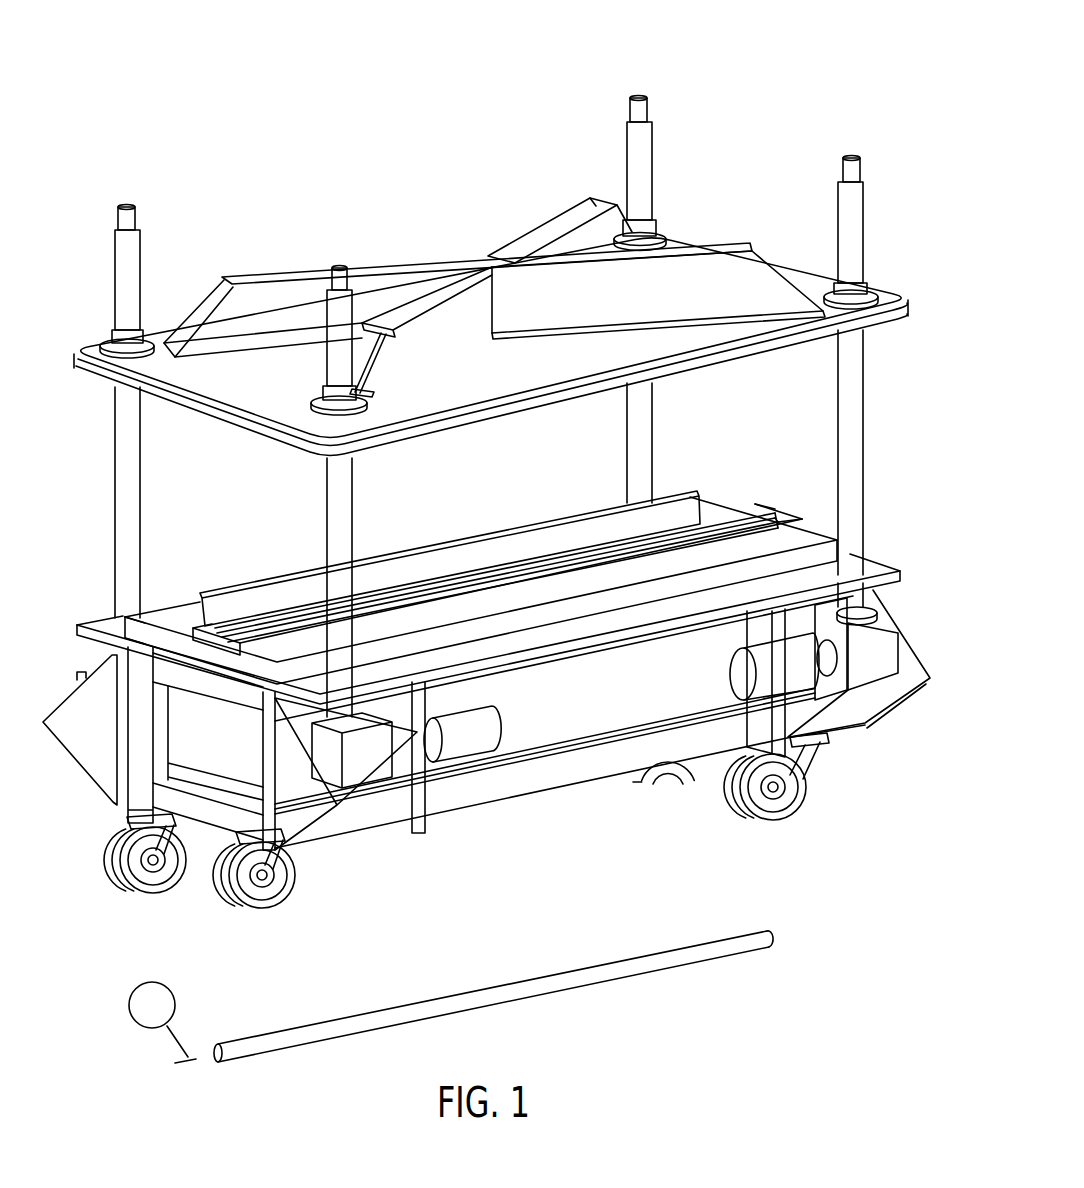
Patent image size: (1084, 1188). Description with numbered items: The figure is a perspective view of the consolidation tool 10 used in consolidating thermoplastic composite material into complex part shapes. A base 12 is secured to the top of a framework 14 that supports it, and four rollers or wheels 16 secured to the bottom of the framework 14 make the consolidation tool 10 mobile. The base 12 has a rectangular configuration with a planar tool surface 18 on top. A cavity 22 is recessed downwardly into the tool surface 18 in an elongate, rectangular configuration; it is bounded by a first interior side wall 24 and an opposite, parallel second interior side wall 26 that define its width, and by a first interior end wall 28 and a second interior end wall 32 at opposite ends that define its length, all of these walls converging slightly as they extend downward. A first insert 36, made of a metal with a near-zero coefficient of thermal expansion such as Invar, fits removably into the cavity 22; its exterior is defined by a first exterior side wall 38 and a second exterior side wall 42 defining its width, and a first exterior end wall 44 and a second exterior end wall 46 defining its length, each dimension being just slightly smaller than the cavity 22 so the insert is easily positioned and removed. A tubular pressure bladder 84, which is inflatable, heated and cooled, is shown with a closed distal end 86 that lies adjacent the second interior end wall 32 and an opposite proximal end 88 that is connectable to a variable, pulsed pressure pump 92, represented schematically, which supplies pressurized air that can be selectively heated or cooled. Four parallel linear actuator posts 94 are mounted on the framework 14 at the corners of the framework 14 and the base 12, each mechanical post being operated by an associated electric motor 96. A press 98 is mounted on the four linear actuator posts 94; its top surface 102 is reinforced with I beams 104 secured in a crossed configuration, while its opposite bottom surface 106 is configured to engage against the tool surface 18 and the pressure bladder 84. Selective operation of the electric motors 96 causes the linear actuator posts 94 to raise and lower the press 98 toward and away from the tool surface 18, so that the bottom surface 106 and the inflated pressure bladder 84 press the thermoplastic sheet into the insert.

The consolidation tool 10 is at (801, 56).
The base 12 is at (230, 635).
The framework 14 is at (506, 808).
The rollers or wheels 16 is at (125, 880).
The tool surface 18 is at (312, 590).
The cavity 22 is at (515, 550).
The first interior side wall 24 is at (425, 600).
The second interior side wall 26 is at (430, 583).
The first interior end wall 28 is at (205, 624).
The second interior end wall 32 is at (763, 520).
The first insert 36 is at (462, 590).
The first exterior side wall 38 is at (627, 533).
The second exterior side wall 42 is at (700, 543).
The first exterior end wall 44 is at (210, 633).
The second exterior end wall 46 is at (777, 522).
The pressure bladder 84 is at (443, 1003).
The distal end 86 is at (772, 937).
The proximal end 88 is at (207, 1047).
The variable pulsed pressure pump 92 is at (160, 980).
The linear actuator posts 94 is at (130, 262).
The electric motor 96 is at (460, 745).
The press 98 is at (298, 370).
The top surface 102 is at (817, 282).
The I beams 104 is at (553, 230).
The bottom surface 106 is at (898, 333).